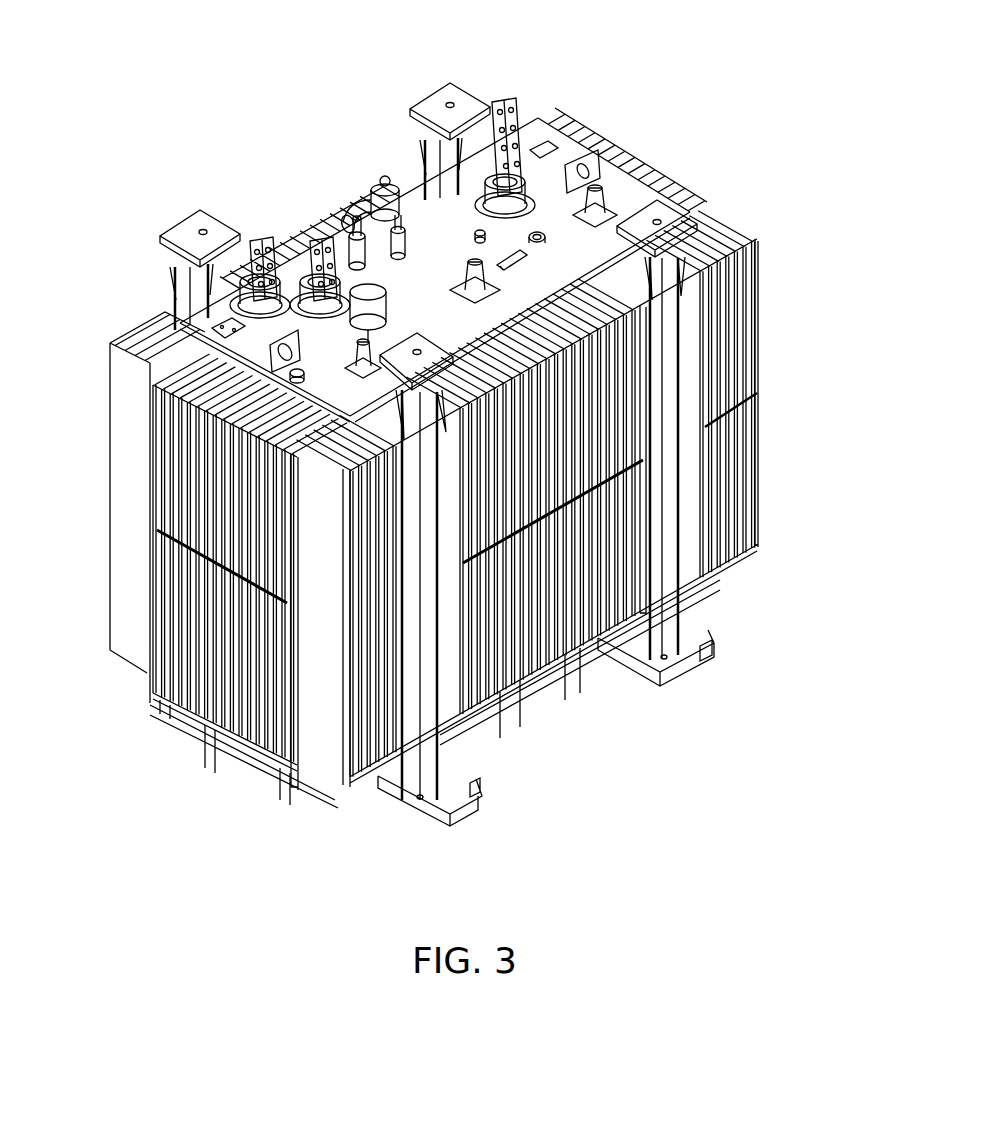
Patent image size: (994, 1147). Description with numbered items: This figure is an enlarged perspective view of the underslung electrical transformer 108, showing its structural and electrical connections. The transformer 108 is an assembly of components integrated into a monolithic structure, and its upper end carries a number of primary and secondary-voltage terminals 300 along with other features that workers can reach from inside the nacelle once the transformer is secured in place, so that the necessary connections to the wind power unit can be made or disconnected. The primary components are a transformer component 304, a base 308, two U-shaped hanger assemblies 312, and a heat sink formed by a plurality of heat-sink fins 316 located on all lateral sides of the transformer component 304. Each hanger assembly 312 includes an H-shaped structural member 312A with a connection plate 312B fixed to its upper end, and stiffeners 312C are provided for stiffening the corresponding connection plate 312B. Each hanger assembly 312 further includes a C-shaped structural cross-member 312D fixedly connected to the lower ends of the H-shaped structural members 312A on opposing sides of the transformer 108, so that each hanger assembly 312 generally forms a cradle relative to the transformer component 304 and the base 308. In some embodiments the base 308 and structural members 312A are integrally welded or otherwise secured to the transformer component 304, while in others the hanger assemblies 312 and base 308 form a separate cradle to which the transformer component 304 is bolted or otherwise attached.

The transformer 108 is at (628, 50).
The primary and secondary-voltage terminals 300 is at (337, 250).
The transformer component 304 is at (421, 268).
The base 308 is at (333, 814).
The U-shaped hanger assembly 312 is at (708, 652).
The H-shaped structural member 312A is at (500, 118).
The connection plate 312B is at (436, 98).
The stiffeners 312C is at (440, 170).
The C-shaped structural cross-member 312D is at (668, 663).
The heat-sink fins 316 is at (600, 143).